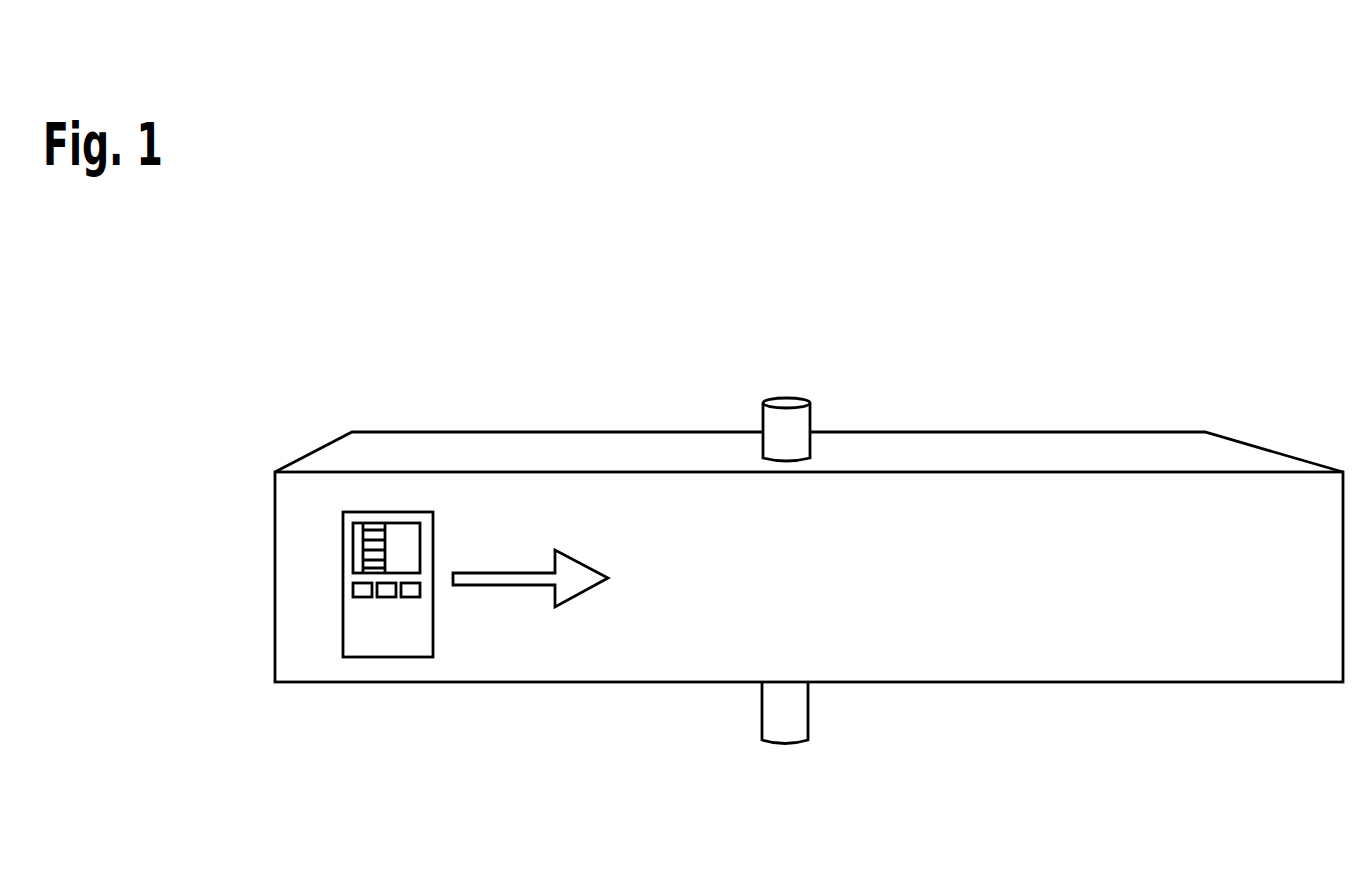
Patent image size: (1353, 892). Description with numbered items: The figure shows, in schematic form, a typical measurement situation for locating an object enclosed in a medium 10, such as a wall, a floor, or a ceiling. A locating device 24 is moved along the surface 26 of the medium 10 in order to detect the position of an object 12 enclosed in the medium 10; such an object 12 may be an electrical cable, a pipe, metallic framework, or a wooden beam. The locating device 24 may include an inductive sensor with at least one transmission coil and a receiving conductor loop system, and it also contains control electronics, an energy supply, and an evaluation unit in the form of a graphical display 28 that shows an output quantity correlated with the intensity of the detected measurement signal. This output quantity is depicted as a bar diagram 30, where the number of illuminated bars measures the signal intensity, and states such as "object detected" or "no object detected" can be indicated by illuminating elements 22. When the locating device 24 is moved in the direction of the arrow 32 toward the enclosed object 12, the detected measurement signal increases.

The medium 10 is at (1103, 504).
The object 12 is at (775, 420).
The illuminating elements 22 is at (352, 590).
The locating device 24 is at (365, 645).
The surface 26 is at (1288, 652).
The graphical display 28 is at (408, 537).
The bar diagram 30 is at (352, 533).
The arrow 32 is at (570, 568).